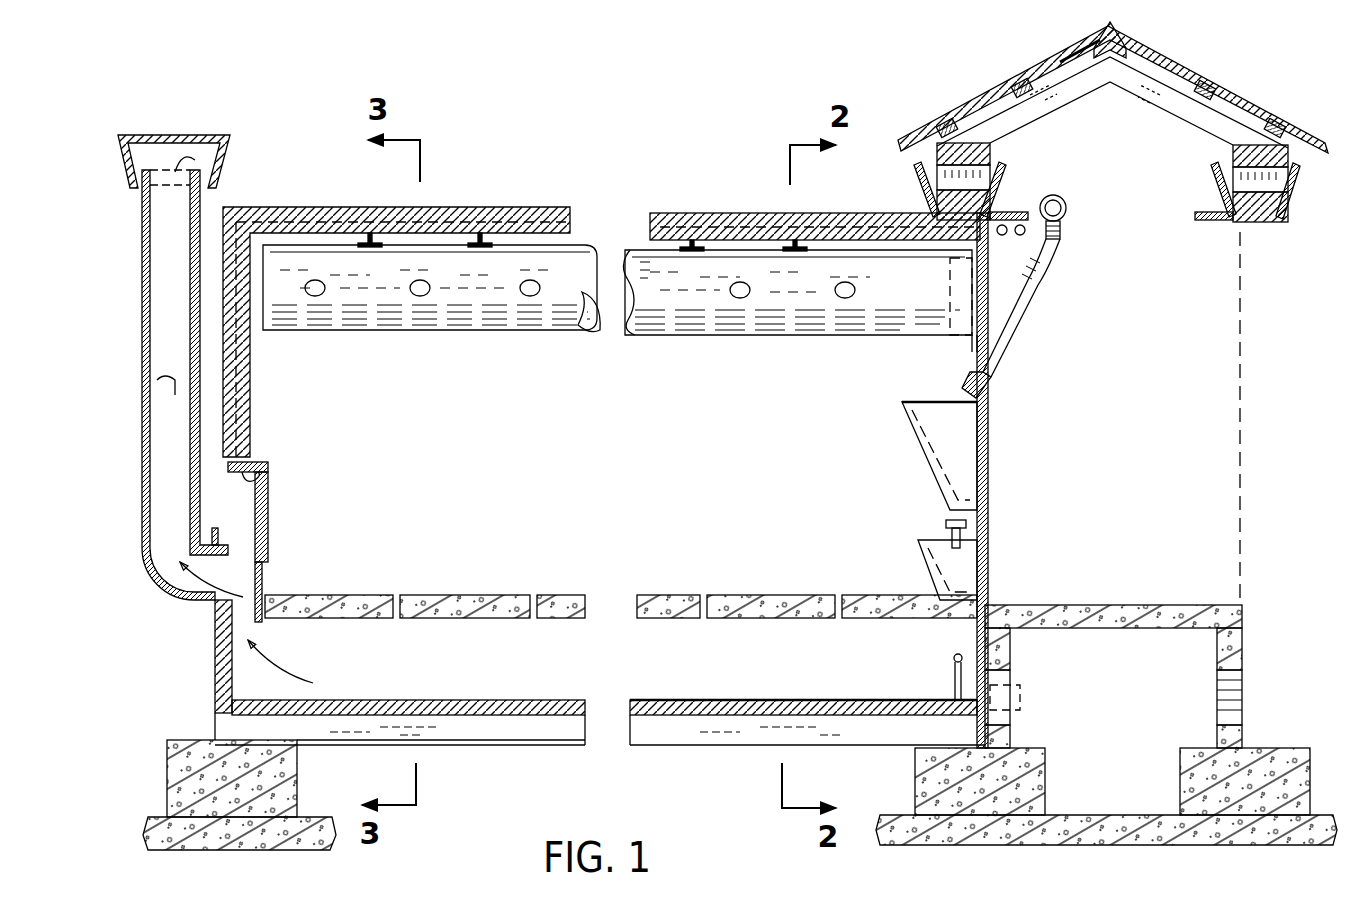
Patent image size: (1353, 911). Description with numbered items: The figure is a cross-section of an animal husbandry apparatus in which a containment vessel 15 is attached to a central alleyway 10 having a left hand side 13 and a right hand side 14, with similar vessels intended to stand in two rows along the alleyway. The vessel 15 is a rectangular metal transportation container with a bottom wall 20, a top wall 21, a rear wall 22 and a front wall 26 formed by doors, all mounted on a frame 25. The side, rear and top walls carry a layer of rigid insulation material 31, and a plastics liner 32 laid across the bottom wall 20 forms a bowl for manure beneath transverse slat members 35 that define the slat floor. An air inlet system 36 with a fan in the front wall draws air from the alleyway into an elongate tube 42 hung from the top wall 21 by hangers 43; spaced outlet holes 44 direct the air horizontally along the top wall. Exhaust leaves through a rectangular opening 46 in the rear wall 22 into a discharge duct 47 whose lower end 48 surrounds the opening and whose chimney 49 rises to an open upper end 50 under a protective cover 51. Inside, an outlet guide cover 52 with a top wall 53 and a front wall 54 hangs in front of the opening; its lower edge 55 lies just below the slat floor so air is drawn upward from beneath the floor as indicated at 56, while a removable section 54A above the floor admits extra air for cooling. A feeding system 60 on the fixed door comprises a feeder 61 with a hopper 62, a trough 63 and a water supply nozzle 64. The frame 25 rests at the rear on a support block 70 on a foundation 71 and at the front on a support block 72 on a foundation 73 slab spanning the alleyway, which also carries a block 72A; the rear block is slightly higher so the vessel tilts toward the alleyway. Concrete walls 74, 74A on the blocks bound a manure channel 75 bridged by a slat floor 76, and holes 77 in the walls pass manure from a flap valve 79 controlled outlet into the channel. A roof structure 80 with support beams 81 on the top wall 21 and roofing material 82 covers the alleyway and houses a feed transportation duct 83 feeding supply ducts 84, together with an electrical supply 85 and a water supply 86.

The central alleyway 10 is at (1150, 128).
The left hand side 13 is at (990, 428).
The right hand side 14 is at (1236, 376).
The containment vessel 15 is at (630, 163).
The bottom wall 20 is at (382, 700).
The top wall 21 is at (736, 212).
The rear wall 22 is at (212, 654).
The frame 25 is at (505, 735).
The front wall 26 is at (990, 480).
The rigid insulation material 31 is at (528, 244).
The plastics liner 32 is at (754, 700).
The slat members 35 is at (496, 594).
The air inlet system 36 is at (948, 273).
The elongate tube 42 is at (560, 338).
The hangers 43 is at (700, 250).
The outlet holes 44 is at (424, 297).
The rectangular opening 46 is at (262, 582).
The discharge duct 47 is at (140, 330).
The lower end 48 is at (165, 603).
The chimney 49 is at (160, 375).
The open upper end 50 is at (212, 160).
The protective cover 51 is at (188, 134).
The outlet guide cover 52 is at (270, 462).
The top wall 53 is at (268, 480).
The front wall 54 is at (263, 548).
The section 54A is at (270, 514).
The lower edge 55 is at (262, 642).
The air escape flow 56 is at (292, 682).
The feeding system 60 is at (900, 472).
The feeder 61 is at (906, 418).
The hopper 62 is at (930, 400).
The trough 63 is at (921, 562).
The water supply nozzle 64 is at (945, 528).
The support block 70 is at (167, 762).
The foundation 71 is at (152, 822).
The support block 72 is at (915, 772).
The support block 72A is at (1180, 766).
The foundation 73 is at (1128, 815).
The concrete wall 74 is at (1012, 648).
The concrete wall 74A is at (1243, 658).
The channel 75 is at (1130, 728).
The slat floor 76 is at (1156, 602).
The holes 77 is at (1012, 688).
The flap valve 79 is at (954, 672).
The roof structure 80 is at (1035, 60).
The support beams 81 is at (916, 180).
The roofing material 82 is at (965, 104).
The feed transportation duct 83 is at (1062, 198).
The supply ducts 84 is at (1024, 292).
The electrical supply 85 is at (1025, 231).
The water supply 86 is at (1004, 236).